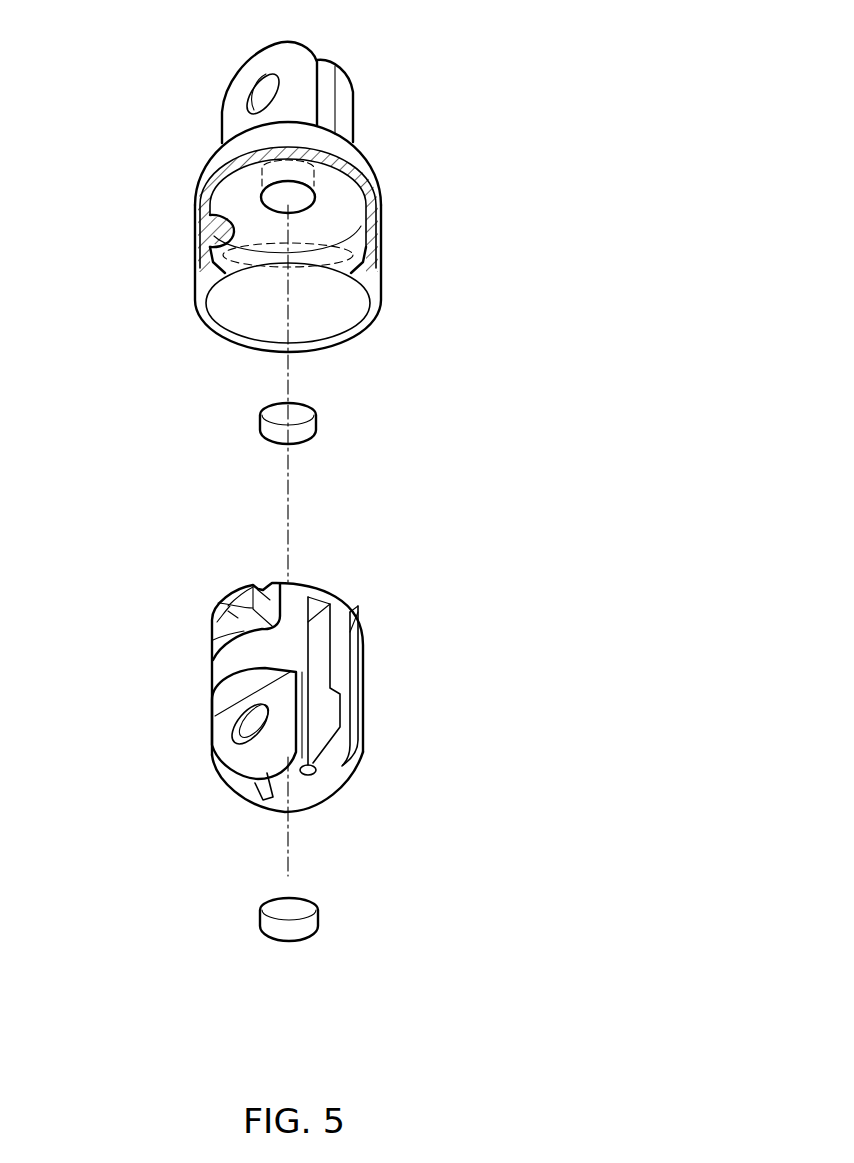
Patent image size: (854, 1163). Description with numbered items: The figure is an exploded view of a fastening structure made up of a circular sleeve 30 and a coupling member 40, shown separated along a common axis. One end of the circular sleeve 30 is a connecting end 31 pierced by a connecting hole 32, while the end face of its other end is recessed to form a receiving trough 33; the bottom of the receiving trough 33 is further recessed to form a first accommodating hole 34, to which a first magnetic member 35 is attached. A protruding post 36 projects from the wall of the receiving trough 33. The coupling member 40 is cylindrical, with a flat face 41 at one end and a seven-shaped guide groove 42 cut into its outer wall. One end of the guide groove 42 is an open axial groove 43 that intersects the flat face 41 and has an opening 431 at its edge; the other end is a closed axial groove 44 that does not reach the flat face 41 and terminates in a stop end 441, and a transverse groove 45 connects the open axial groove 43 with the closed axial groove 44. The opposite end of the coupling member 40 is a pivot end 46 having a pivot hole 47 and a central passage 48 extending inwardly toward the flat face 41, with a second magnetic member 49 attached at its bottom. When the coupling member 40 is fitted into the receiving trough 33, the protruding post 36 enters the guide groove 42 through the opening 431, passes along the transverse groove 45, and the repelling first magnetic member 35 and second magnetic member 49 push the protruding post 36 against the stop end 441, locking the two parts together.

The circular sleeve 30 is at (301, 211).
The connecting end 31 is at (348, 91).
The connecting hole 32 is at (263, 86).
The receiving trough 33 is at (328, 305).
The first accommodating hole 34 is at (312, 207).
The first magnetic member 35 is at (265, 412).
The protruding post 36 is at (212, 195).
The coupling member 40 is at (294, 688).
The flat face 41 is at (306, 582).
The guide groove 42 is at (218, 603).
The transverse groove 45 is at (235, 605).
The open axial groove 43 is at (254, 585).
The opening 431 is at (270, 582).
The closed axial groove 44 is at (217, 642).
The stop end 441 is at (217, 617).
The pivot end 46 is at (358, 763).
The pivot hole 47 is at (250, 733).
The central passage 48 is at (292, 778).
The second magnetic member 49 is at (264, 908).